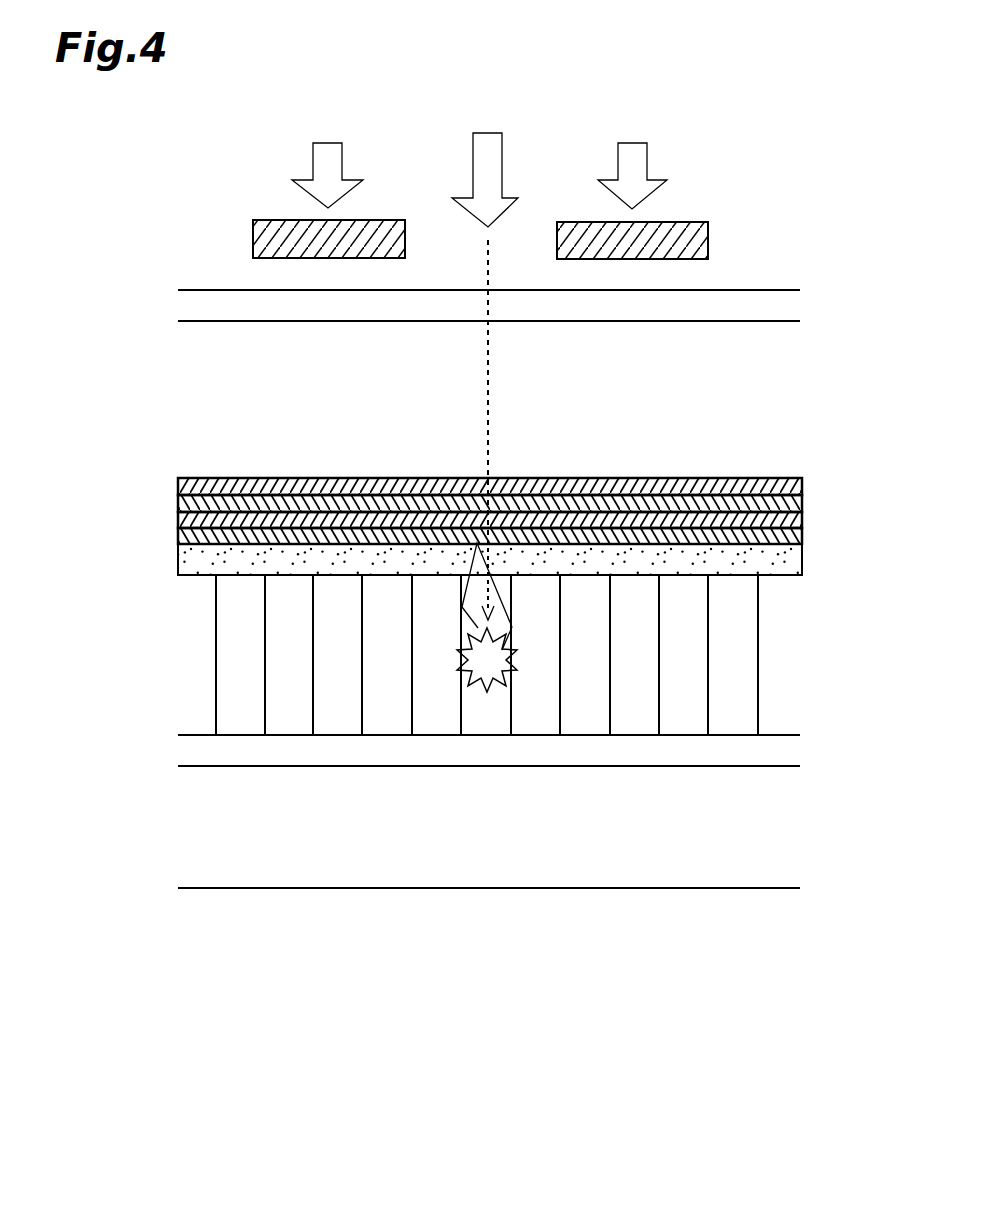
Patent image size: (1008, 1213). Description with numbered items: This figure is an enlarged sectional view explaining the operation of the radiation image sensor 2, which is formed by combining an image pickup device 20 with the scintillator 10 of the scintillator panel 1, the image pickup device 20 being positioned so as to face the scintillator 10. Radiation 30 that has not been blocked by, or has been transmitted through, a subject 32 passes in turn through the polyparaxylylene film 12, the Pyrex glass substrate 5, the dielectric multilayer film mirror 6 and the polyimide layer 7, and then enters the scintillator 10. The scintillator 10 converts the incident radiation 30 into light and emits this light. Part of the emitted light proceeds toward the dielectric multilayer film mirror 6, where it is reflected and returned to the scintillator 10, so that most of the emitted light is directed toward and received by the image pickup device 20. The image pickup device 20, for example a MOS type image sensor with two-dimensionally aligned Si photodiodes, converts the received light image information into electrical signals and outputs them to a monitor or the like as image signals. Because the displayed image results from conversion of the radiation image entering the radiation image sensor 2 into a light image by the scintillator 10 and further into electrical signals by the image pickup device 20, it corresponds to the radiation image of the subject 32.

The scintillator panel 1 is at (112, 413).
The radiation image sensor 2 is at (222, 940).
The Pyrex glass substrate 5 is at (790, 405).
The dielectric multilayer film mirror 6 is at (808, 480).
The polyimide layer 7 is at (790, 564).
The scintillator 10 is at (737, 722).
The polyparaxylylene film 12 is at (790, 305).
The image pickup device 20 is at (555, 870).
The radiation 30 is at (535, 382).
The subject 32 is at (708, 238).